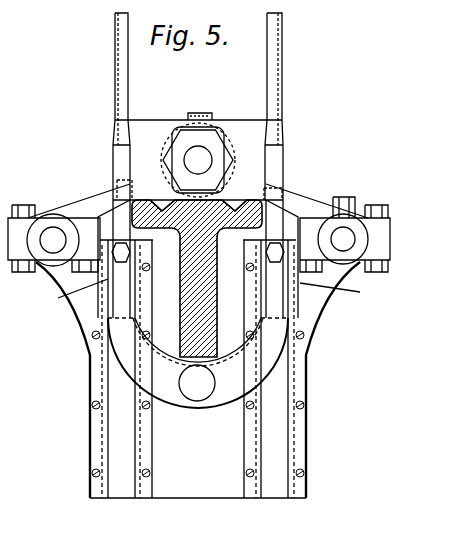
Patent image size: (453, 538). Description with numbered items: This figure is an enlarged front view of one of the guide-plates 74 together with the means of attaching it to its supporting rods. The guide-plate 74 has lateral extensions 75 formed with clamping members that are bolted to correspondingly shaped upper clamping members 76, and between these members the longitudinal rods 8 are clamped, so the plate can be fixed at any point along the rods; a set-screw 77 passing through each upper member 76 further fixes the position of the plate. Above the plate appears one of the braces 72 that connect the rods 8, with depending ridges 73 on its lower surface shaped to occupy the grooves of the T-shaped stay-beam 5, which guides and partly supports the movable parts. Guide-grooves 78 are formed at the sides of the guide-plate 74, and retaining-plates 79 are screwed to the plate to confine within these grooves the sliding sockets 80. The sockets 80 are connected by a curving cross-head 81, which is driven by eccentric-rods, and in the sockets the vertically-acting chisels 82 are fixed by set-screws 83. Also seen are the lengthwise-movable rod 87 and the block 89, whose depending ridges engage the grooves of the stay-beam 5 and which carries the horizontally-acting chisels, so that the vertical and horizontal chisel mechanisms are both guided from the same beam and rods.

The stay-beam 5 is at (180, 282).
The rod 8 is at (395, 244).
The brace 72 is at (88, 207).
The depending ridge 73 is at (160, 206).
The guide-plate 74 is at (198, 386).
The lateral extension 75 is at (85, 317).
The upper clamping member 76 is at (50, 217).
The set-screw 77 is at (347, 196).
The guide-groove 78 is at (198, 369).
The retaining-plate 79 is at (95, 440).
The sliding socket 80 is at (122, 287).
The cross-head 81 is at (210, 383).
The vertically-acting chisel 82 is at (115, 45).
The set-screw 83 is at (210, 297).
The rod 87 is at (209, 156).
The block 89 is at (198, 156).